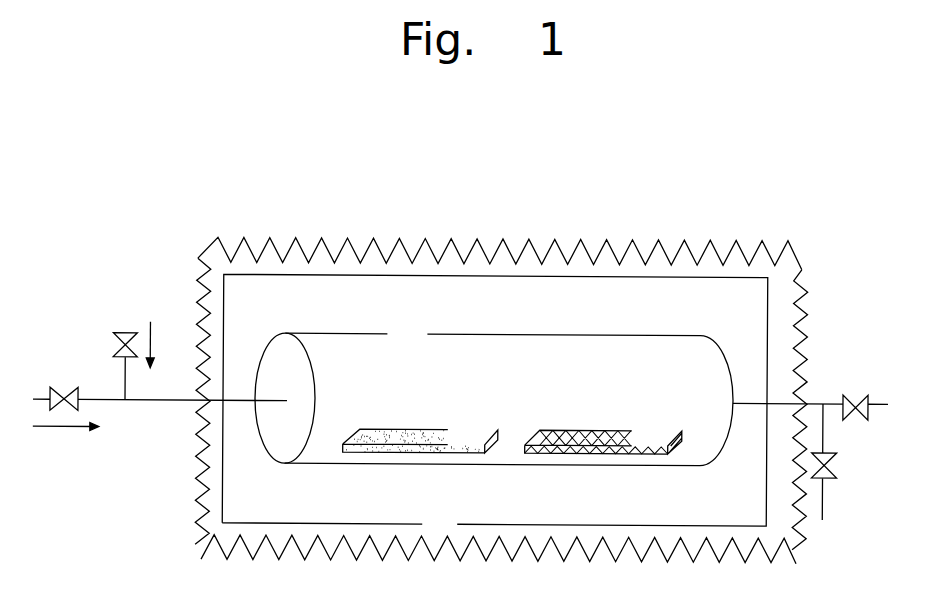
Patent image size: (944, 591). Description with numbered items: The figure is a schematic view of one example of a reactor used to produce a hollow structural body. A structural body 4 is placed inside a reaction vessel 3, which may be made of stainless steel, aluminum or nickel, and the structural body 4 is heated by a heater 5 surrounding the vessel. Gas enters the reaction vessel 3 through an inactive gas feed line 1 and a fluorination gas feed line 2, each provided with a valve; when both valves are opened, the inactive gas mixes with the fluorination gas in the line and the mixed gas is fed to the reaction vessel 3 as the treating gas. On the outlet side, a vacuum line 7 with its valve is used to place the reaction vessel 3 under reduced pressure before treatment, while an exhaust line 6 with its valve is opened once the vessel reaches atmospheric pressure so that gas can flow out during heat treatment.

The inactive gas feed line 1 is at (125, 350).
The fluorination gas feed line 2 is at (64, 381).
The reaction vessel 3 is at (494, 394).
The structural body 4 is at (512, 437).
The heater 5 is at (495, 406).
The exhaust line 6 is at (855, 391).
The vacuum line 7 is at (841, 462).